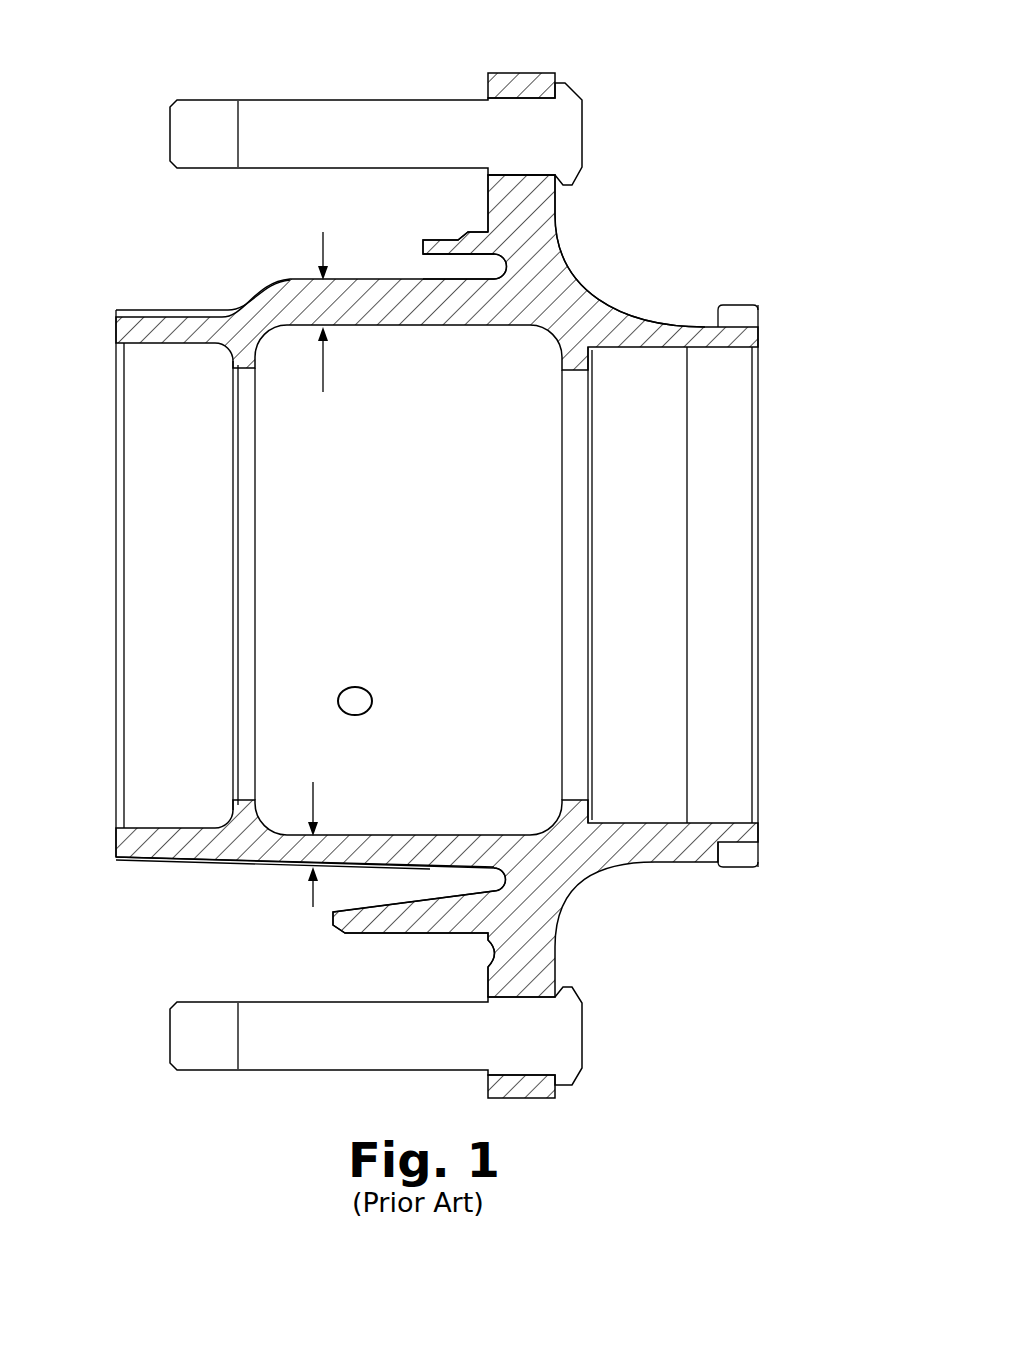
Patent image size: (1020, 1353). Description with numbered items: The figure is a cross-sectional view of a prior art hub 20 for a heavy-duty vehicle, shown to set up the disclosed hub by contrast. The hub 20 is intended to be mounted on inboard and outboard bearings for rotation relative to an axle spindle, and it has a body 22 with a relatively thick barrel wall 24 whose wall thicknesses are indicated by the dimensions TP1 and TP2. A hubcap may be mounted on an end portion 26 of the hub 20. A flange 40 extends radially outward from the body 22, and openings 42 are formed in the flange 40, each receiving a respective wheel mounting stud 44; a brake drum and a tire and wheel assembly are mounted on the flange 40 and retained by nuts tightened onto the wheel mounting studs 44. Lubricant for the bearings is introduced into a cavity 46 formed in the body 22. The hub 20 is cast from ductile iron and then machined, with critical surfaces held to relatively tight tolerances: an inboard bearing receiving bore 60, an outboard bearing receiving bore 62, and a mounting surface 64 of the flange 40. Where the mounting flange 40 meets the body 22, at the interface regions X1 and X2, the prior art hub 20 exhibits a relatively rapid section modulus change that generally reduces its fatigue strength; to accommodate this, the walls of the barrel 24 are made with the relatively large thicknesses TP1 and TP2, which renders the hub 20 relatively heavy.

The hub 20 is at (672, 172).
The body 22 is at (243, 288).
The barrel wall 24 is at (306, 295).
The end portion 26 is at (150, 840).
The flange 40 is at (530, 199).
The openings 42 is at (530, 107).
The wheel mounting stud 44 is at (306, 137).
The cavity 46 is at (340, 828).
The inboard bearing receiving bore 60 is at (650, 348).
The outboard bearing receiving bore 62 is at (165, 345).
The mounting surface 64 is at (488, 192).
The interface region X1 is at (585, 263).
The interface region X2 is at (503, 262).
The thickness TP1 is at (316, 830).
The thickness TP2 is at (326, 367).